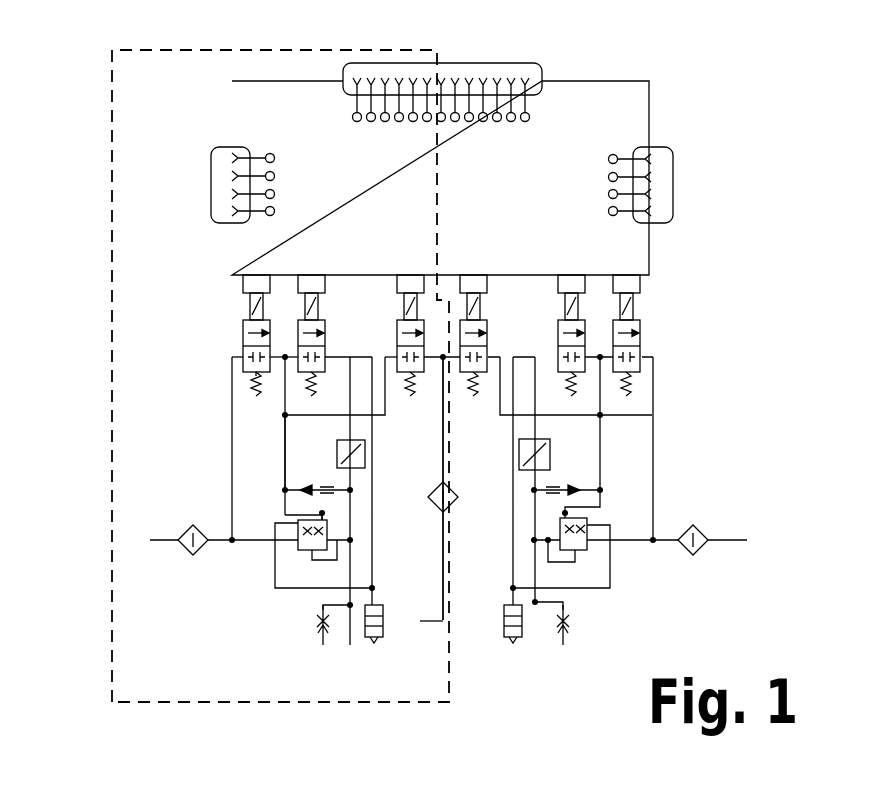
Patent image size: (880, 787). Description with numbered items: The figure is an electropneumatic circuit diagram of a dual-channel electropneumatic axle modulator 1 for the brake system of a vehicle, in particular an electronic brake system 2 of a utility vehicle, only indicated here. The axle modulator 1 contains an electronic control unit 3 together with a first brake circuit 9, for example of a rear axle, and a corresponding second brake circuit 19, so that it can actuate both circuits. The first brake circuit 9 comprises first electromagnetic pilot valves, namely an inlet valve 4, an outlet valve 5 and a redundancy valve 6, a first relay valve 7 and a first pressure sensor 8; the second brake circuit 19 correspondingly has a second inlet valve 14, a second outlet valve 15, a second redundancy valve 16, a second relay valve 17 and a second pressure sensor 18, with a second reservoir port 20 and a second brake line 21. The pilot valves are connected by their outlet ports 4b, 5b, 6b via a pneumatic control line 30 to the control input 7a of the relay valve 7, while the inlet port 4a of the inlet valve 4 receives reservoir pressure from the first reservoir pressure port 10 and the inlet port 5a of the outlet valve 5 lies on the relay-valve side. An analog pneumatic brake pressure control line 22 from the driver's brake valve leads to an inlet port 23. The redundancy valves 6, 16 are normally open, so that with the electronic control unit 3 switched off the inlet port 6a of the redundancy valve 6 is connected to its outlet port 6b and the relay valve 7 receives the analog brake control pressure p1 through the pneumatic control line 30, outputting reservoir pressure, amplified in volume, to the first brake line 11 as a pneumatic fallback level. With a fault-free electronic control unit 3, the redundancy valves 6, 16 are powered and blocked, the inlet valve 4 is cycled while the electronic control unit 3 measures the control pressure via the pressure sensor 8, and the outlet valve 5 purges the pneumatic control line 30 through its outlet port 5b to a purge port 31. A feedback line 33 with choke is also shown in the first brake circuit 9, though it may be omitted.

The dual-channel electropneumatic axle modulator 1 is at (672, 78).
The electronic brake system 2 is at (593, 656).
The electronic control unit 3 is at (598, 108).
The first inlet valve 4 is at (241, 322).
The inlet port of inlet valve 4a is at (243, 354).
The outlet port of inlet valve 4b is at (278, 366).
The first outlet valve 5 is at (281, 275).
The inlet port of outlet valve 5a is at (276, 275).
The outlet port of outlet valve 5b is at (356, 275).
The first redundancy valve 6 is at (389, 275).
The inlet port of first redundancy valve 6a is at (461, 275).
The outlet port of first redundancy valve 6b is at (381, 275).
The first relay valve 7 is at (298, 524).
The control input of first relay valve 7a is at (327, 513).
The first pressure sensor 8 is at (337, 449).
The first brake circuit 9 is at (112, 702).
The first reservoir pressure port 10 is at (193, 553).
The first brake line 11 is at (350, 645).
The second inlet valve 14 is at (645, 337).
The second outlet valve 15 is at (602, 275).
The second redundancy valve 16 is at (510, 275).
The second relay valve 17 is at (590, 518).
The second pressure sensor 18 is at (550, 451).
The second brake circuit 19 is at (668, 612).
The second reservoir port 20 is at (702, 552).
The second brake line 21 is at (535, 605).
The pneumatic brake pressure control line 22 is at (447, 623).
The inlet port 23 is at (458, 500).
The pneumatic control line 30 is at (285, 428).
The purge port 31 is at (374, 643).
The feedback line 33 is at (325, 490).
The analog brake control pressure p1 is at (420, 621).